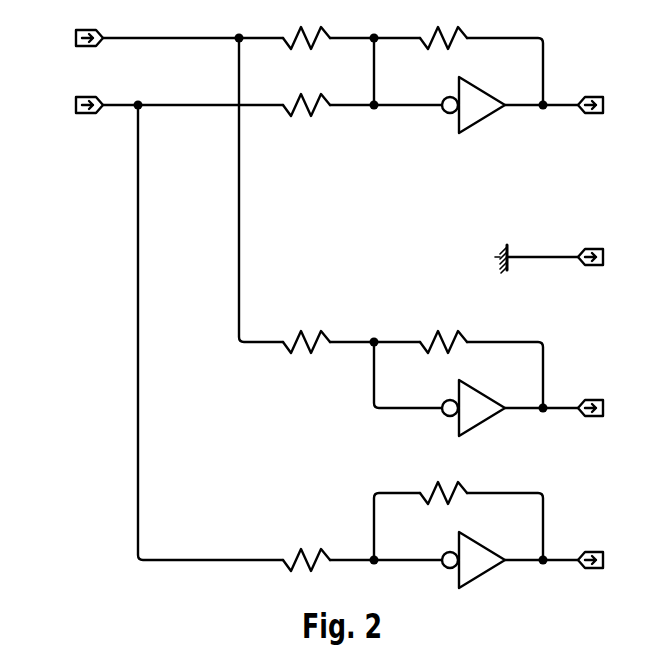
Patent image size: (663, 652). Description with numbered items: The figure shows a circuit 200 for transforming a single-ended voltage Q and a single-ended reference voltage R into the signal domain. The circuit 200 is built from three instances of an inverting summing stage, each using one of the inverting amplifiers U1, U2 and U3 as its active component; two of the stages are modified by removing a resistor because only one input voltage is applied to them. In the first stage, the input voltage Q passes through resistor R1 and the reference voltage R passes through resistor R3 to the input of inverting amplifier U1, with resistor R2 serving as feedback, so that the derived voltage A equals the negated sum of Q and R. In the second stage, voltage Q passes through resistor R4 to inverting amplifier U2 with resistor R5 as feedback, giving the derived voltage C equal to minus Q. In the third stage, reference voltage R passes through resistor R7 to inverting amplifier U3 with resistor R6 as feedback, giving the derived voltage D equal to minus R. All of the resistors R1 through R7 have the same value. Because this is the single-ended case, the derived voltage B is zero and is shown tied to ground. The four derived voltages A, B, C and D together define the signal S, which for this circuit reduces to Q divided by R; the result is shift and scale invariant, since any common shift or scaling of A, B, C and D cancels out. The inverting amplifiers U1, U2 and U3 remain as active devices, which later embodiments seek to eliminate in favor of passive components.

The circuit 200 is at (93, 390).
The resistor R1 is at (301, 29).
The resistor R2 is at (438, 29).
The resistor R3 is at (301, 96).
The resistor R4 is at (301, 333).
The resistor R5 is at (438, 333).
The resistor R6 is at (438, 484).
The resistor R7 is at (301, 551).
The inverting amplifier U1 is at (473, 99).
The inverting amplifier U2 is at (473, 402).
The inverting amplifier U3 is at (473, 554).
The single-ended voltage Q is at (74, 38).
The single-ended reference voltage R is at (74, 105).
The derived voltage A is at (607, 106).
The derived voltage B is at (565, 259).
The derived voltage C is at (606, 409).
The derived voltage D is at (607, 561).